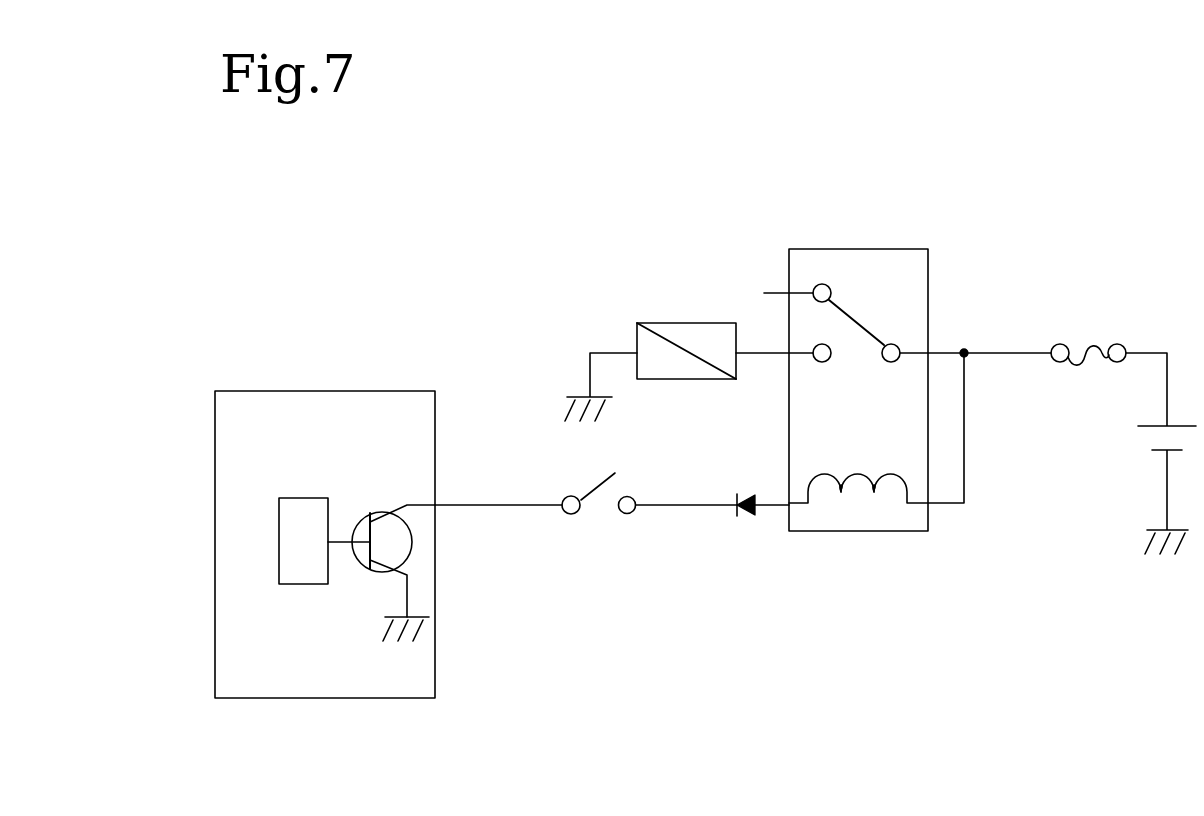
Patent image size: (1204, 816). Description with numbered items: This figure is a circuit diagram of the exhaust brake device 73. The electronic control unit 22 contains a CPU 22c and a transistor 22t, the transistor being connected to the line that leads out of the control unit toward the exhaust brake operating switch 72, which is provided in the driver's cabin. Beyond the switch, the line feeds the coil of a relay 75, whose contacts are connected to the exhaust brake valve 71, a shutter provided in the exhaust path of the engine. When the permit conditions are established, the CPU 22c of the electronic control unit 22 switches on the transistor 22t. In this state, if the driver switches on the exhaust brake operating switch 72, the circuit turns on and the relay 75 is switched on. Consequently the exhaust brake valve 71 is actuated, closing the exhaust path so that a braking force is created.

The electronic control unit 22 is at (278, 684).
The CPU 22c is at (288, 555).
The transistor 22t is at (398, 548).
The exhaust brake valve 71 is at (693, 333).
The exhaust brake operating switch 72 is at (595, 517).
The exhaust brake device 73 is at (780, 152).
The relay 75 is at (886, 270).